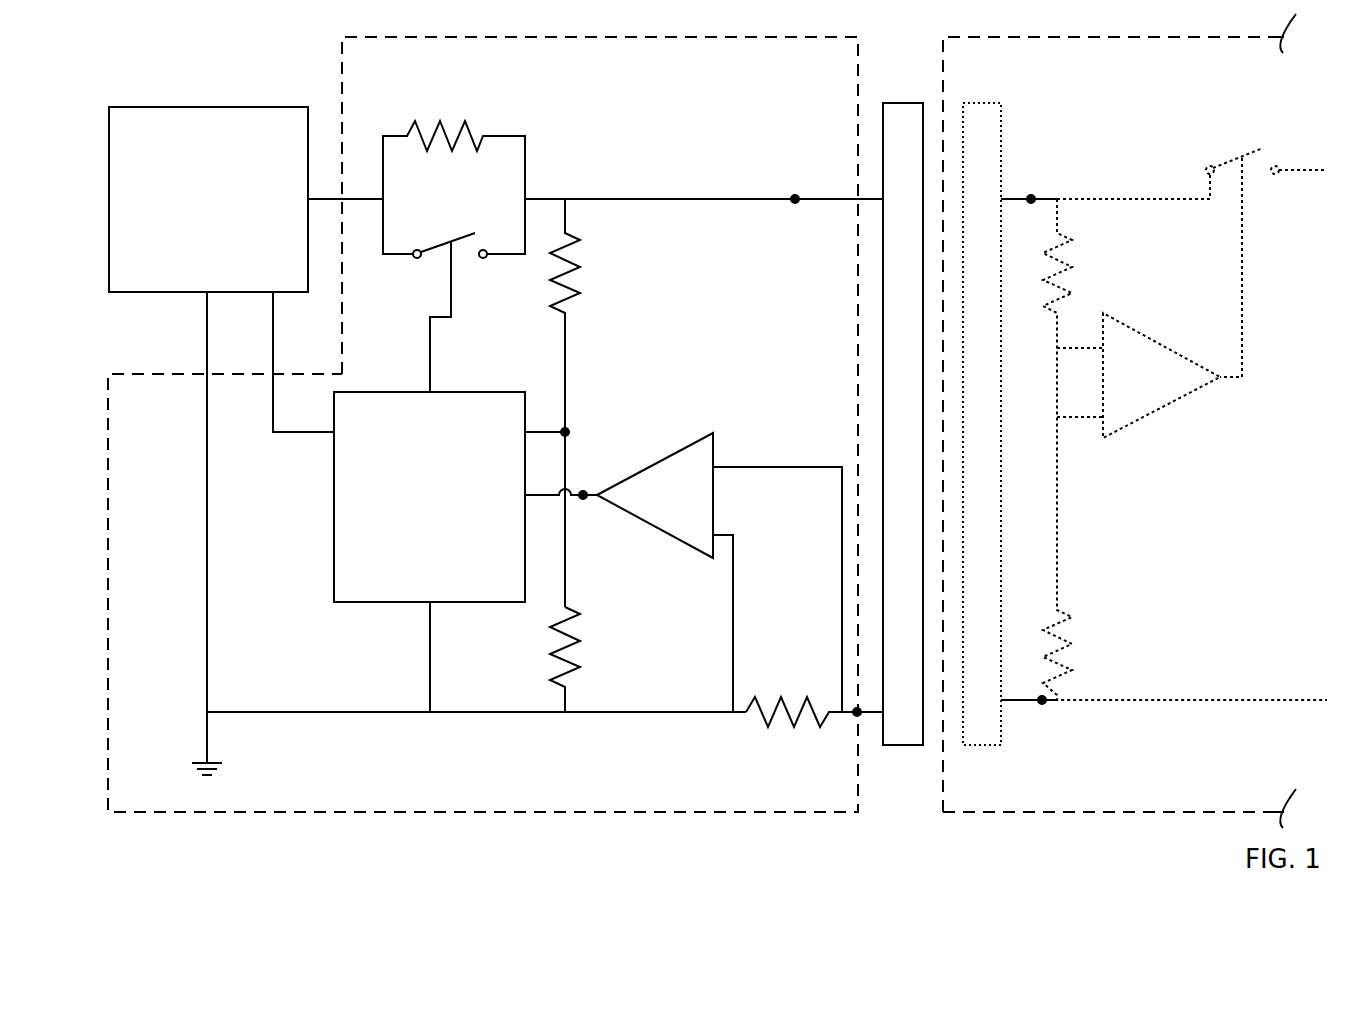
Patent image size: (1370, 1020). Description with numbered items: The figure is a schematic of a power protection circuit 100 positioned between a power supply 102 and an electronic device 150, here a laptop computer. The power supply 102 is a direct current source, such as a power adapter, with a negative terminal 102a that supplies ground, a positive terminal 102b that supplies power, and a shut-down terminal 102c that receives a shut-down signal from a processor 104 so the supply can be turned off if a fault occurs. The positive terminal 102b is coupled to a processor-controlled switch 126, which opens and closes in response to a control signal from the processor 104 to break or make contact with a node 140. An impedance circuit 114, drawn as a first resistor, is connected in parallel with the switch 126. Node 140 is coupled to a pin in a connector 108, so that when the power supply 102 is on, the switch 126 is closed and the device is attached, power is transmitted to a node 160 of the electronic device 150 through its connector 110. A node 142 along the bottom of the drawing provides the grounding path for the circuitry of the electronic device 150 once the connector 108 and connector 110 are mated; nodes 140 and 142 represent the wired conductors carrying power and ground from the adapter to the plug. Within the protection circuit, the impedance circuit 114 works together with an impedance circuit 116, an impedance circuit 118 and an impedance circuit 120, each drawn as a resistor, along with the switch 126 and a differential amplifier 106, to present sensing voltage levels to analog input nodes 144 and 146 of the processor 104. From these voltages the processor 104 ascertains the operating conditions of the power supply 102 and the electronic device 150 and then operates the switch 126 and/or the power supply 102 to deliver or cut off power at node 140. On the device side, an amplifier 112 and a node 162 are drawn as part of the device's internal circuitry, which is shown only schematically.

The power protection circuit 100 is at (768, 34).
The electronic device 150 is at (1130, 34).
The power supply 102 is at (208, 199).
The negative terminal 102a is at (203, 295).
The positive terminal 102b is at (310, 199).
The shut-down terminal 102c is at (275, 296).
The processor 104 is at (429, 552).
The differential amplifier 106 is at (719, 572).
The connector 108 is at (903, 424).
The connector 110 is at (982, 424).
The operational amplifier 112 is at (1161, 375).
The impedance circuit 114 is at (476, 100).
The impedance circuit 116 is at (627, 268).
The impedance circuit 118 is at (627, 646).
The impedance circuit 120 is at (770, 748).
The processor-controlled switch 126 is at (408, 268).
The node 140 is at (797, 197).
The node 142 is at (856, 714).
The analog input node 144 is at (568, 432).
The analog input node 146 is at (586, 492).
The node 160 is at (1033, 196).
The node 162 is at (1042, 702).